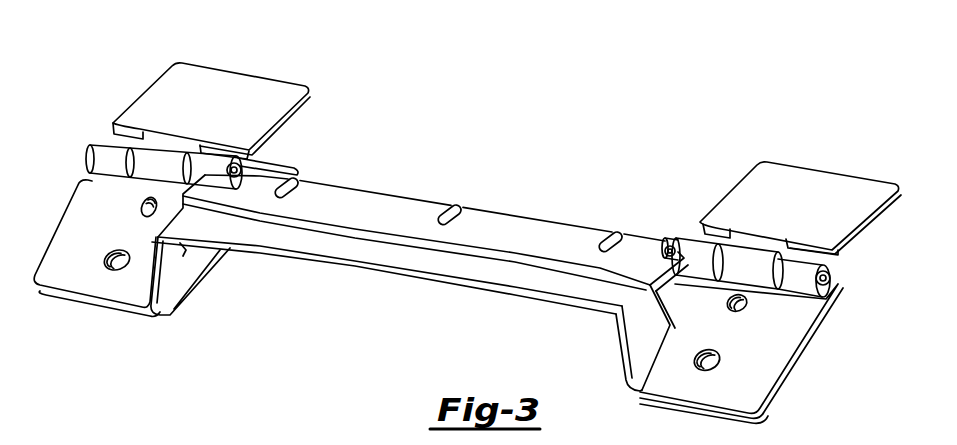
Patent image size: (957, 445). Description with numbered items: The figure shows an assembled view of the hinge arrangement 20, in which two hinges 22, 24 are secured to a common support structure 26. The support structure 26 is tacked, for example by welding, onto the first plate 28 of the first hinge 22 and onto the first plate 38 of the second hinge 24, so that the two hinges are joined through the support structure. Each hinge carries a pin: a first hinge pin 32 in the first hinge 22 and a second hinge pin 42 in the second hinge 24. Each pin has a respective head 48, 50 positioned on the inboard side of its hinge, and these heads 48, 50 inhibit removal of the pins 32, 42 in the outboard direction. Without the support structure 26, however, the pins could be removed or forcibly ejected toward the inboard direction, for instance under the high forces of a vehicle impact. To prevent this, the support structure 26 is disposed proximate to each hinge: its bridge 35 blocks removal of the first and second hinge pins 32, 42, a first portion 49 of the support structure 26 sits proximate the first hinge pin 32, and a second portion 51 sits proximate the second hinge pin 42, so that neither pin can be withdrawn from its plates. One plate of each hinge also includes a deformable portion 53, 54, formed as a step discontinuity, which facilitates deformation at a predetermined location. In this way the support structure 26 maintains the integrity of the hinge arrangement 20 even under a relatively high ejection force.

The hinge arrangement 20 is at (539, 116).
The hinge 22 is at (236, 62).
The hinge 24 is at (824, 160).
The support structure 26 is at (394, 190).
The first plate 28 is at (80, 181).
The first hinge pin 32 is at (88, 155).
The bridge 35 is at (423, 280).
The first plate 38 is at (780, 373).
The second hinge pin 42 is at (832, 282).
The head 48 is at (243, 168).
The first portion 49 is at (262, 169).
The head 50 is at (672, 238).
The second portion 51 is at (666, 244).
The deformable portion 53 is at (112, 132).
The deformable portion 54 is at (824, 253).